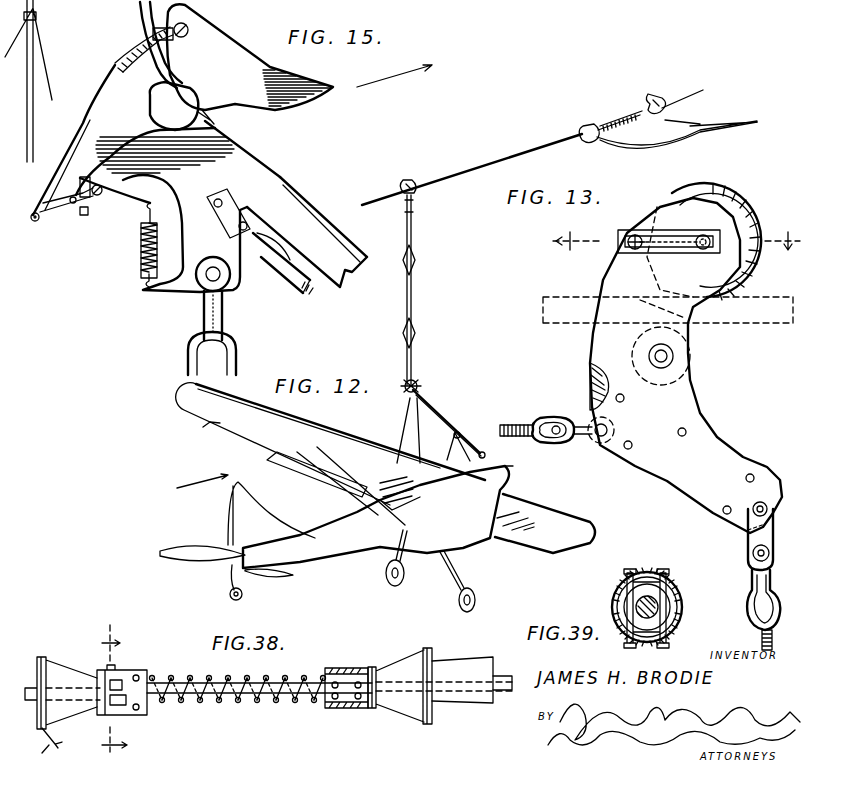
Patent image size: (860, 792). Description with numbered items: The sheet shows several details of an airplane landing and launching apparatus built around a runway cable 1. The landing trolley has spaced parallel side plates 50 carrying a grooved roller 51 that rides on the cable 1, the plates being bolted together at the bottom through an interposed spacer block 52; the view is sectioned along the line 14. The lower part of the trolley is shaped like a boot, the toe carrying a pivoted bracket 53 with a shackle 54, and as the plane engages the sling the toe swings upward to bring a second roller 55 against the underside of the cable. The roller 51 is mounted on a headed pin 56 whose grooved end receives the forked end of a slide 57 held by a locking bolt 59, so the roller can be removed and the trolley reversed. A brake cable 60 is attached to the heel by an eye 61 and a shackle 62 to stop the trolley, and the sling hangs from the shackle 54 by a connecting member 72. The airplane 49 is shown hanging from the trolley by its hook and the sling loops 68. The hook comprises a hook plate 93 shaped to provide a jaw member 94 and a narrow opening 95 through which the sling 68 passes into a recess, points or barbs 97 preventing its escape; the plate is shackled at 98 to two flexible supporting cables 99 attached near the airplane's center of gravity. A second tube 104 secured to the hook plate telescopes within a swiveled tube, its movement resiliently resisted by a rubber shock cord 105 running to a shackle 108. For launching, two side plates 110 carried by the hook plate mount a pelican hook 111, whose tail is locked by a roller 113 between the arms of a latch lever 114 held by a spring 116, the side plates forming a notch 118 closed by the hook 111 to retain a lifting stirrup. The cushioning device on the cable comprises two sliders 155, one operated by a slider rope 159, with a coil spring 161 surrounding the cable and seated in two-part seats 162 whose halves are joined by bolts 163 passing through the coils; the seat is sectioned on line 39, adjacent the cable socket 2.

In FIG. 12, the cable 1 is at (447, 178).
In FIG. 38, the cable 1 is at (270, 695).
In FIG. 38, the socket 2 is at (455, 673).
In FIG. 13, the section line 14 is at (666, 234).
In FIG. 38, the section line 39 is at (119, 699).
In FIG. 12, the airplane 49 is at (365, 540).
In FIG. 12, the side plates 50 is at (408, 182).
In FIG. 13, the side plates 50 is at (590, 343).
In FIG. 13, the grooved roller 51 is at (753, 212).
In FIG. 13, the spacer block 52 is at (590, 392).
In FIG. 13, the pivoted bracket 53 is at (748, 538).
In FIG. 13, the shackle 54 is at (750, 574).
In FIG. 13, the second roller 55 is at (694, 354).
In FIG. 13, the headed pin 56 is at (700, 253).
In FIG. 13, the slide 57 is at (670, 250).
In FIG. 13, the locking bolt 59 is at (627, 257).
In FIG. 13, the brake cable 60 is at (507, 420).
In FIG. 13, the eye 61 is at (530, 446).
In FIG. 13, the shackle 62 is at (577, 442).
In FIG. 15, the loops 68 is at (140, 22).
In FIG. 12, the loops 68 is at (412, 328).
In FIG. 13, the connecting member 72 is at (760, 631).
In FIG. 15, the hook plate 93 is at (245, 167).
In FIG. 12, the hook plate 93 is at (417, 387).
In FIG. 15, the jaw member 94 is at (300, 80).
In FIG. 15, the opening 95 is at (220, 123).
In FIG. 15, the points or barbs 97 is at (212, 109).
In FIG. 15, the shackle connection 98 is at (197, 310).
In FIG. 15, the flexible supporting cables 99 is at (192, 360).
In FIG. 12, the flexible supporting cables 99 is at (408, 431).
In FIG. 15, the second tube 104 is at (302, 202).
In FIG. 15, the rubber shock cord 105 is at (310, 287).
In FIG. 15, the shackle 108 is at (258, 257).
In FIG. 15, the side plates 110 is at (62, 160).
In FIG. 15, the pelican hook 111 is at (100, 82).
In FIG. 15, the roller 113 is at (70, 213).
In FIG. 15, the latch lever 114 is at (132, 200).
In FIG. 15, the spring 116 is at (140, 250).
In FIG. 15, the notch 118 is at (168, 50).
In FIG. 12, the sliders 155 is at (590, 122).
In FIG. 38, the sliders 155 is at (60, 675).
In FIG. 12, the slider rope 159 is at (690, 138).
In FIG. 38, the slider rope 159 is at (41, 750).
In FIG. 12, the coil spring 161 is at (615, 115).
In FIG. 39, the coil spring 161 is at (648, 643).
In FIG. 38, the coil spring 161 is at (236, 698).
In FIG. 39, the seats 162 is at (620, 600).
In FIG. 38, the seats 162 is at (147, 710).
In FIG. 39, the bolts 163 is at (643, 580).